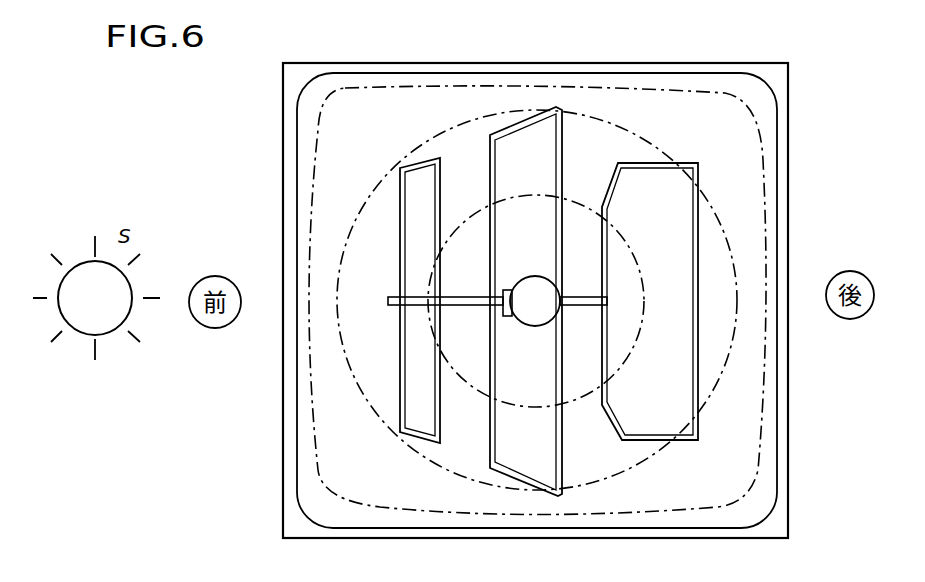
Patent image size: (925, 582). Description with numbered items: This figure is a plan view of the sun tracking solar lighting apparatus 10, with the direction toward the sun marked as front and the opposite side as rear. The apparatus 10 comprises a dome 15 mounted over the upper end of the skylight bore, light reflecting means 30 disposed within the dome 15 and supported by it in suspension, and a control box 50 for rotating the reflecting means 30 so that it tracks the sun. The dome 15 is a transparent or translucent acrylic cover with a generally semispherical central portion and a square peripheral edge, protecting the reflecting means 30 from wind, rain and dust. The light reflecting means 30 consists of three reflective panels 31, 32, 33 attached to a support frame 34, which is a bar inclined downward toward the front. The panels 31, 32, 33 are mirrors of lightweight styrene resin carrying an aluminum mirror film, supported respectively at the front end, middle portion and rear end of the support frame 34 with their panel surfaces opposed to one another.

The sun tracking solar lighting apparatus 10 is at (812, 65).
The dome 15 is at (737, 193).
The light reflecting means 30 is at (588, 153).
The reflective panel 31 is at (413, 370).
The reflective panel 32 is at (547, 462).
The reflective panel 33 is at (672, 381).
The support frame 34 is at (462, 298).
The control box 50 is at (527, 327).